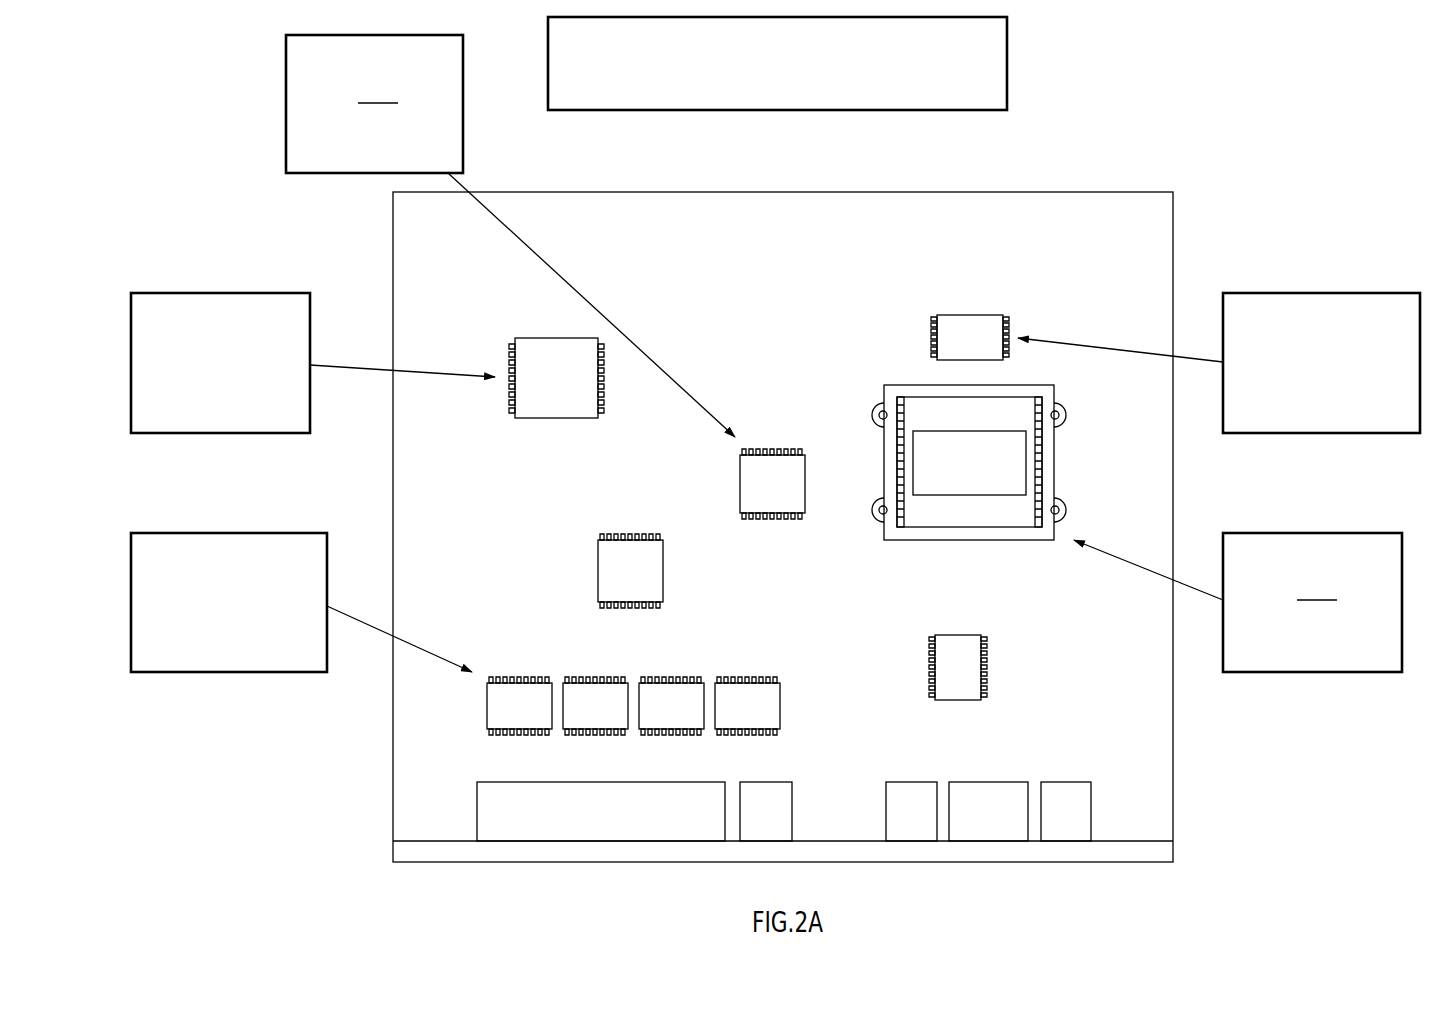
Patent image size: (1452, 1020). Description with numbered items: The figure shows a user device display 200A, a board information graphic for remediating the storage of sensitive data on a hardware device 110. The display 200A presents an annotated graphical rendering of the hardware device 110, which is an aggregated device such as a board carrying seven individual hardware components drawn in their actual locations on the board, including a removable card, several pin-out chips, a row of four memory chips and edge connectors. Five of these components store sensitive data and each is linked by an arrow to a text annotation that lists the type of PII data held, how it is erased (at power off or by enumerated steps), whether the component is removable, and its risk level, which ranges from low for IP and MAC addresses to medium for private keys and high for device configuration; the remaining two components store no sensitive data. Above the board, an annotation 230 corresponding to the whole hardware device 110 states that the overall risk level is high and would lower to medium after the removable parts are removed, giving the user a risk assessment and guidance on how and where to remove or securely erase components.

The device display 200A is at (163, 113).
The hardware device 110 is at (1243, 148).
The annotation 230 is at (636, 110).